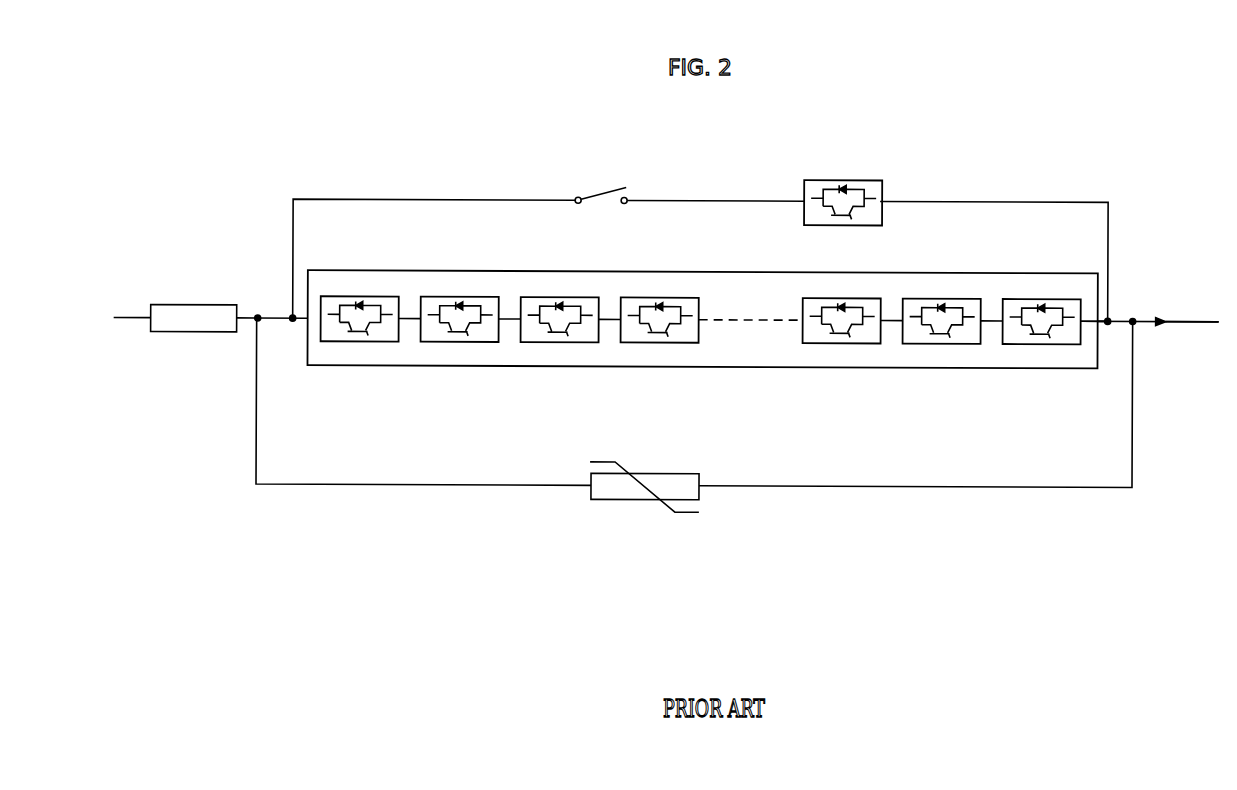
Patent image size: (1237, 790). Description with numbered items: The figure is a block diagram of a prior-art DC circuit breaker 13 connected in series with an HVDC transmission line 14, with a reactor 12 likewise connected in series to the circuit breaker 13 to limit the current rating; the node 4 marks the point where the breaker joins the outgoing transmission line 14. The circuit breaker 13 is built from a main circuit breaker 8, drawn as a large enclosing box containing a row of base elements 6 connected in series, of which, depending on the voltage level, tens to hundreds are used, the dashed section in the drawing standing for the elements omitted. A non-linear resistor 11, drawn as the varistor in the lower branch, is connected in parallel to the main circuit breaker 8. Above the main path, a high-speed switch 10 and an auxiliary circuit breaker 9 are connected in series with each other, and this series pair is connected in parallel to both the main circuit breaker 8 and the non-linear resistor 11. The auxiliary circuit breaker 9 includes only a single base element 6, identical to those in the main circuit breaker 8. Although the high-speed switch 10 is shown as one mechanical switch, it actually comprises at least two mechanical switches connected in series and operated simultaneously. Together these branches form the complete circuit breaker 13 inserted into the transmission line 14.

The output node / line 4 is at (1162, 321).
The base element 6 is at (359, 296).
The main circuit breaker 8 is at (729, 268).
The auxiliary circuit breaker 9 is at (876, 168).
The high-speed switch 10 is at (602, 194).
The non-linear resistor 11 is at (643, 502).
The reactor 12 is at (193, 305).
The circuit breaker 13 is at (1111, 188).
The transmission line 14 is at (1206, 321).